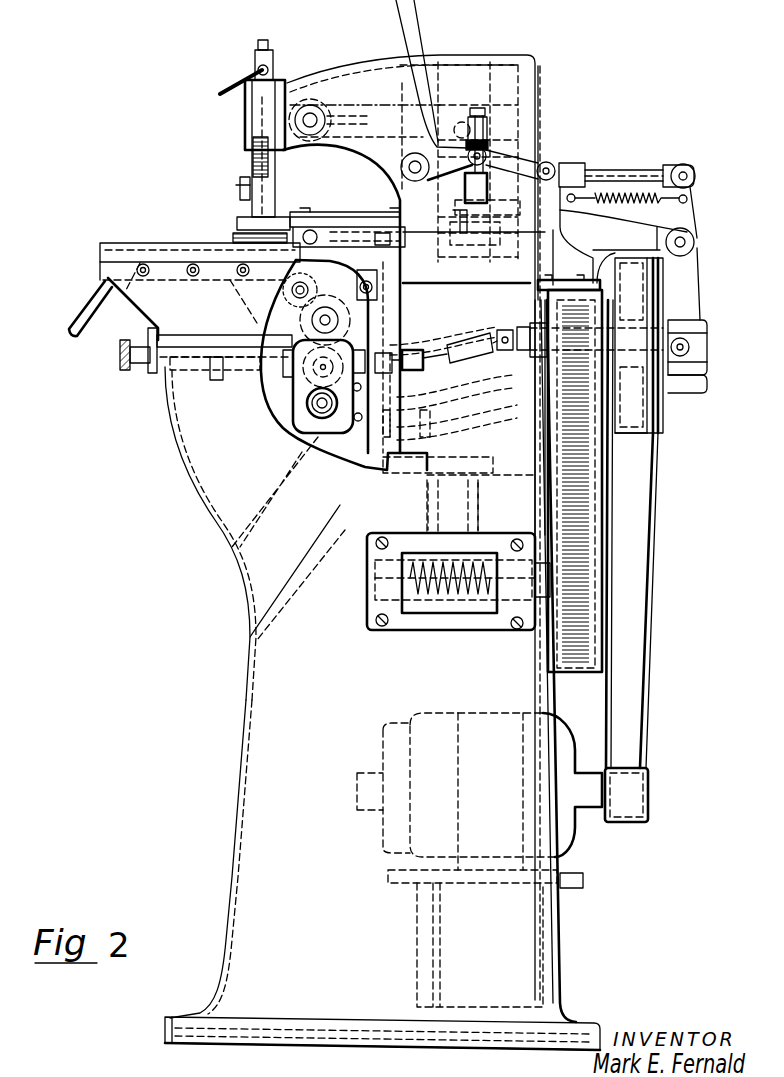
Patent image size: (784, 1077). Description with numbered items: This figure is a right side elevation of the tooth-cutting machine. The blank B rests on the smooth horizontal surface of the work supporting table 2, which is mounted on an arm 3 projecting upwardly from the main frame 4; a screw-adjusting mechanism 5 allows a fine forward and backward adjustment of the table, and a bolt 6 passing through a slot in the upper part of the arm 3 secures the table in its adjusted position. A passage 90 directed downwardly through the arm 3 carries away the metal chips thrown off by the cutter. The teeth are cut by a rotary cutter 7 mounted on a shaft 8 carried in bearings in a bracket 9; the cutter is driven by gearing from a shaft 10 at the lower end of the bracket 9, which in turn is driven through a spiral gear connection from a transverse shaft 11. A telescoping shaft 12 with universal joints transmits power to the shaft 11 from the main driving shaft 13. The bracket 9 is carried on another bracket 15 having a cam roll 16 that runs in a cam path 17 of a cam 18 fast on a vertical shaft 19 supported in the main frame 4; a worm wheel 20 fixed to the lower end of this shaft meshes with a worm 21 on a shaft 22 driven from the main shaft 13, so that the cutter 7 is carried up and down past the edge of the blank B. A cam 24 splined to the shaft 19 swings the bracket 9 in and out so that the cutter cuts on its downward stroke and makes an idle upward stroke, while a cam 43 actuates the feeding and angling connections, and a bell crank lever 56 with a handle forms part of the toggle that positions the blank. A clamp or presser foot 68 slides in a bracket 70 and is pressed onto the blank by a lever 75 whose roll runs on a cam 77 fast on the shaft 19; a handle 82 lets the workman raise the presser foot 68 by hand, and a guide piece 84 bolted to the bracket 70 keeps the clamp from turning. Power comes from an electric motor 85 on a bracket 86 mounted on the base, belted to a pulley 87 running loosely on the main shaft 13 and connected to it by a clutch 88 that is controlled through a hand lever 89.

The work supporting table 2 is at (117, 243).
The arm 3 is at (190, 447).
The main frame 4 is at (250, 745).
The screw-adjusting mechanism 5 is at (140, 370).
The bolt 6 is at (200, 373).
The rotary cutter 7 is at (292, 318).
The shaft 8 is at (290, 293).
The bracket 9 is at (287, 347).
The shaft 10 is at (310, 404).
The shaft 11 is at (385, 372).
The telescoping shaft 12 is at (467, 350).
The main driving shaft 13 is at (663, 323).
The bracket 15 is at (340, 438).
The cam roll 16 is at (435, 480).
The cam path 17 is at (490, 388).
The cam 18 is at (495, 413).
The vertical shaft 19 is at (447, 512).
The worm wheel 20 is at (503, 623).
The worm 21 is at (440, 603).
The shaft 22 is at (610, 577).
The cam 24 is at (553, 264).
The cam 43 is at (500, 250).
The bell crank lever 56 is at (95, 308).
The clamp or presser foot 68 is at (240, 228).
The bracket 70 is at (250, 145).
The lever 75 is at (343, 137).
The cam 77 is at (495, 107).
The handle 82 is at (222, 92).
The guide piece 84 is at (245, 192).
The electric motor 85 is at (577, 830).
The bracket 86 is at (556, 938).
The pulley 87 is at (645, 432).
The clutch 88 is at (665, 392).
The hand lever 89 is at (412, 17).
The passage 90 is at (265, 557).
The blank B is at (232, 241).